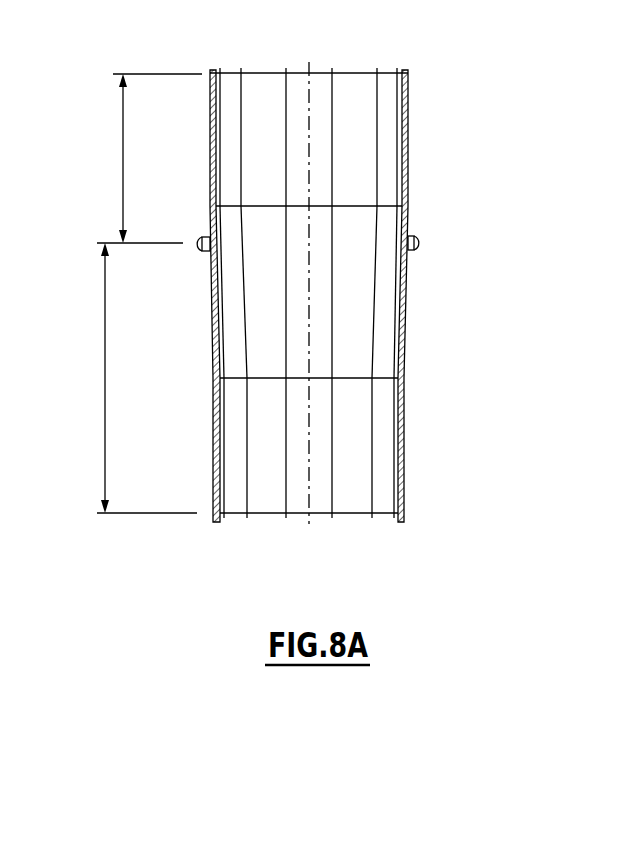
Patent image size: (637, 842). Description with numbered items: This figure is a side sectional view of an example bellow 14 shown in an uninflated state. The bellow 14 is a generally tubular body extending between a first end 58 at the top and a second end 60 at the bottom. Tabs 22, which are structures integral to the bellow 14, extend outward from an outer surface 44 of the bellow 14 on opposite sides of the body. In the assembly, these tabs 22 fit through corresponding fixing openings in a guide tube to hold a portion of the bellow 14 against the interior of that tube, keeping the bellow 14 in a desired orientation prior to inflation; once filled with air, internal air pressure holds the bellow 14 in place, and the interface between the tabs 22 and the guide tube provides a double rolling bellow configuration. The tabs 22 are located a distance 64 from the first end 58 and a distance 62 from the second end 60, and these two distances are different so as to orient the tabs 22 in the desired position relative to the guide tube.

The bellow 14 is at (128, 383).
The tabs 22 is at (199, 256).
The outer surface 44 is at (413, 176).
The first end 58 is at (211, 60).
The second end 60 is at (221, 532).
The distance 62 is at (104, 345).
The distance 64 is at (122, 157).